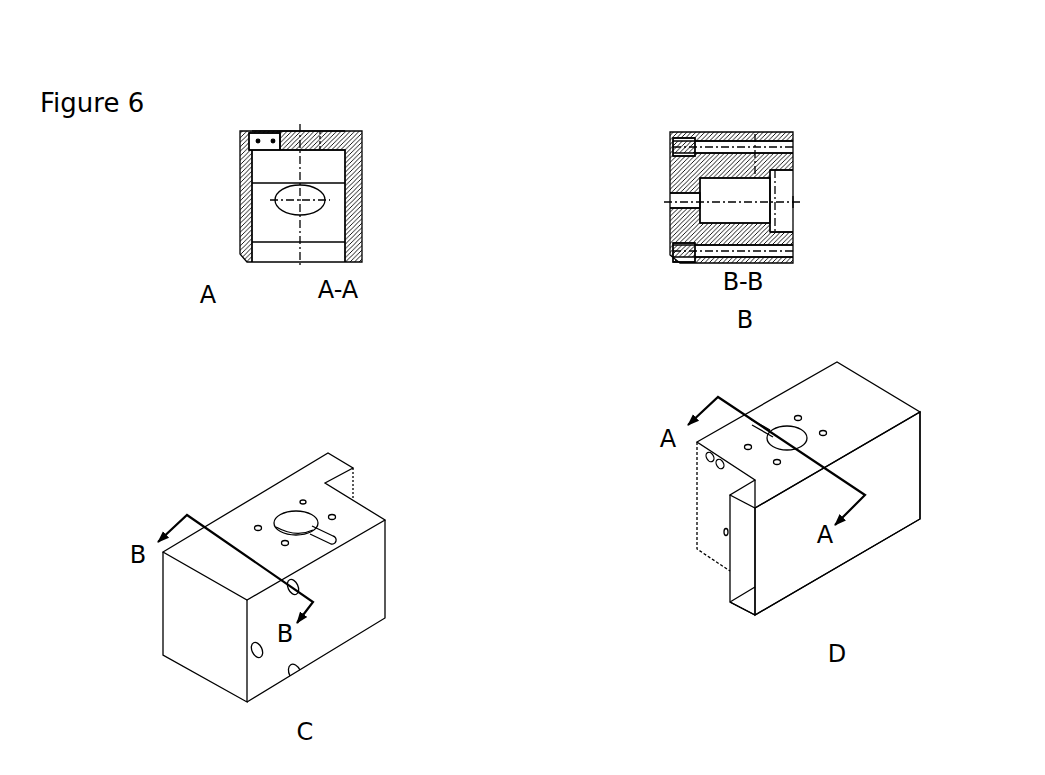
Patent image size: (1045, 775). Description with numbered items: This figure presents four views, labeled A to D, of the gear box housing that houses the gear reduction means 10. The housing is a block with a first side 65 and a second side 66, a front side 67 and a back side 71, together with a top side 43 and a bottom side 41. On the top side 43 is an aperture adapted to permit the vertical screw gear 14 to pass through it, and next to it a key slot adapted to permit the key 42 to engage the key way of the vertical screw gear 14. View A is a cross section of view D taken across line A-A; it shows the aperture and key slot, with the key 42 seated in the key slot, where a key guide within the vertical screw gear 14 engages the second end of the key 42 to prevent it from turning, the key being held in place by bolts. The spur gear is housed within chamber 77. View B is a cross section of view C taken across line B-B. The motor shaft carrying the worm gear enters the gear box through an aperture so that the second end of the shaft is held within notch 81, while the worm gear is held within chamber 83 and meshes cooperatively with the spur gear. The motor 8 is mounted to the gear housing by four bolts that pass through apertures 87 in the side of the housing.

The chamber 77 is at (346, 198).
The key 42 is at (262, 143).
The chamber 83 is at (730, 196).
The notch 81 is at (668, 202).
The motor 8 is at (825, 202).
The vertical screw gear 14 is at (305, 279).
The gear reduction means 10 is at (598, 308).
The top side 43 is at (301, 482).
The second side 66 is at (185, 645).
The front side 67 is at (375, 615).
The apertures 87 is at (253, 657).
The first side 65 is at (707, 537).
The back side 71 is at (885, 505).
The bottom side 41 is at (786, 626).